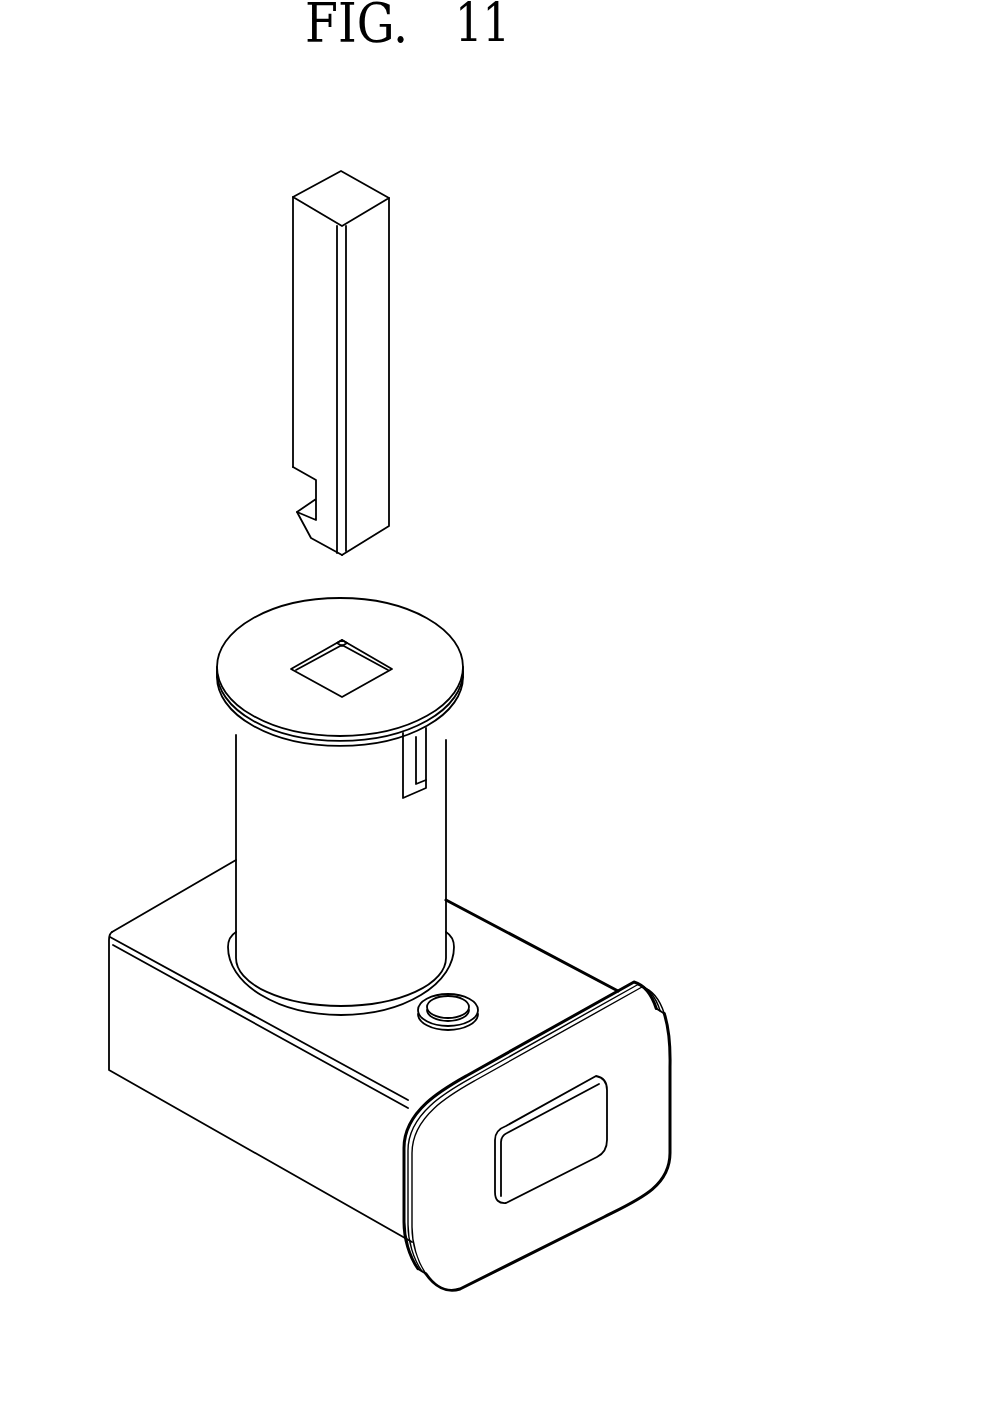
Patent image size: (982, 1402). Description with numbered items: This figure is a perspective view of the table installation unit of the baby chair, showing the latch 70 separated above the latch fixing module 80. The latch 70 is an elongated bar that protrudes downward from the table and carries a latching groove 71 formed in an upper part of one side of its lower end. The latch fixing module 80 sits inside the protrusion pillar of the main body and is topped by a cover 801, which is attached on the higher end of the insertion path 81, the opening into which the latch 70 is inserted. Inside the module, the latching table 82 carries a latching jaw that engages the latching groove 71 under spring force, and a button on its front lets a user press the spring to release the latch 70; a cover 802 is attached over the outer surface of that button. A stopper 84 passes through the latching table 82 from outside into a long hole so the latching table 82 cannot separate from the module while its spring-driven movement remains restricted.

The latch 70 is at (317, 343).
The latching groove 71 is at (303, 493).
The latch fixing module 80 is at (238, 1100).
The cover 801 is at (238, 673).
The insertion path 81 is at (362, 673).
The stopper 84 is at (448, 1004).
The cover 802 is at (660, 1083).
The latching table 82 is at (552, 1155).